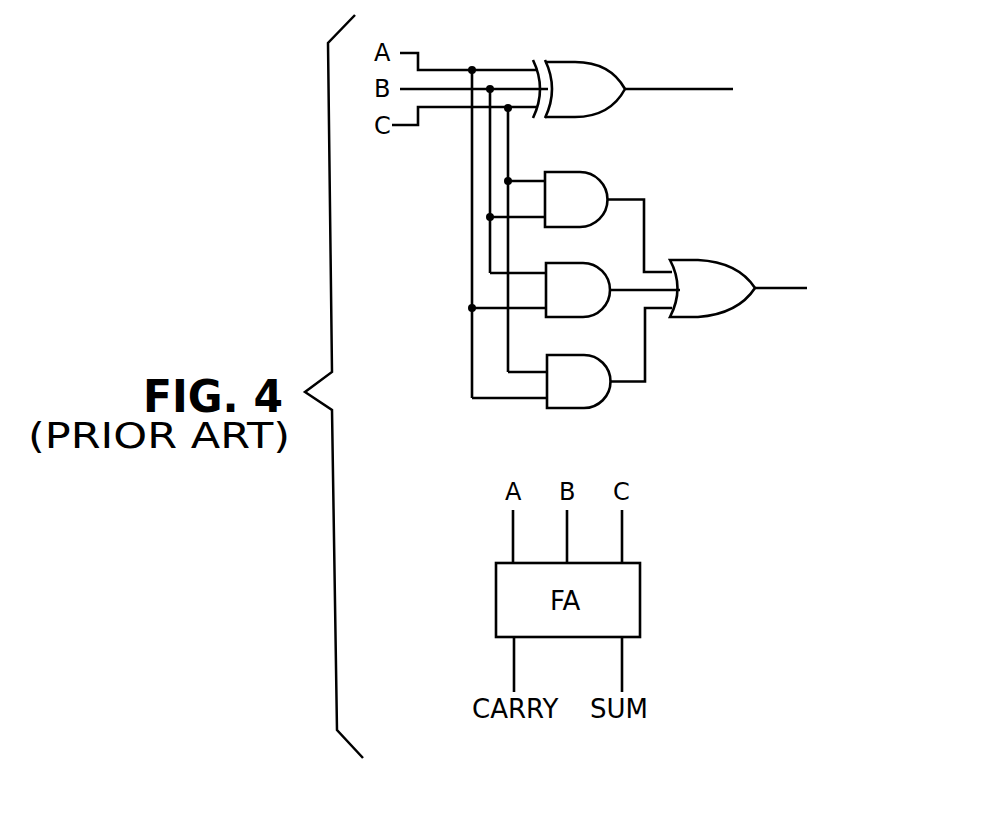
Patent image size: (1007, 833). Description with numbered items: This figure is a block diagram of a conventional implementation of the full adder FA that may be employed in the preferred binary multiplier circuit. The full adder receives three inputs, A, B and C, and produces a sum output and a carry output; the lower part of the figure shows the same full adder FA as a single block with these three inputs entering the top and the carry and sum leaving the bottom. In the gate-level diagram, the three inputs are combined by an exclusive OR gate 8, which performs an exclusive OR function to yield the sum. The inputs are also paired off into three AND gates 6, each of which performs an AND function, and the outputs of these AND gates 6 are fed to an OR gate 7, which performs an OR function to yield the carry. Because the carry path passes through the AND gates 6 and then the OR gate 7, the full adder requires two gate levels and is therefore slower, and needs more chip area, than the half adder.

The AND gate 6 is at (598, 173).
The OR gate 7 is at (718, 312).
The exclusive OR gate 8 is at (606, 66).